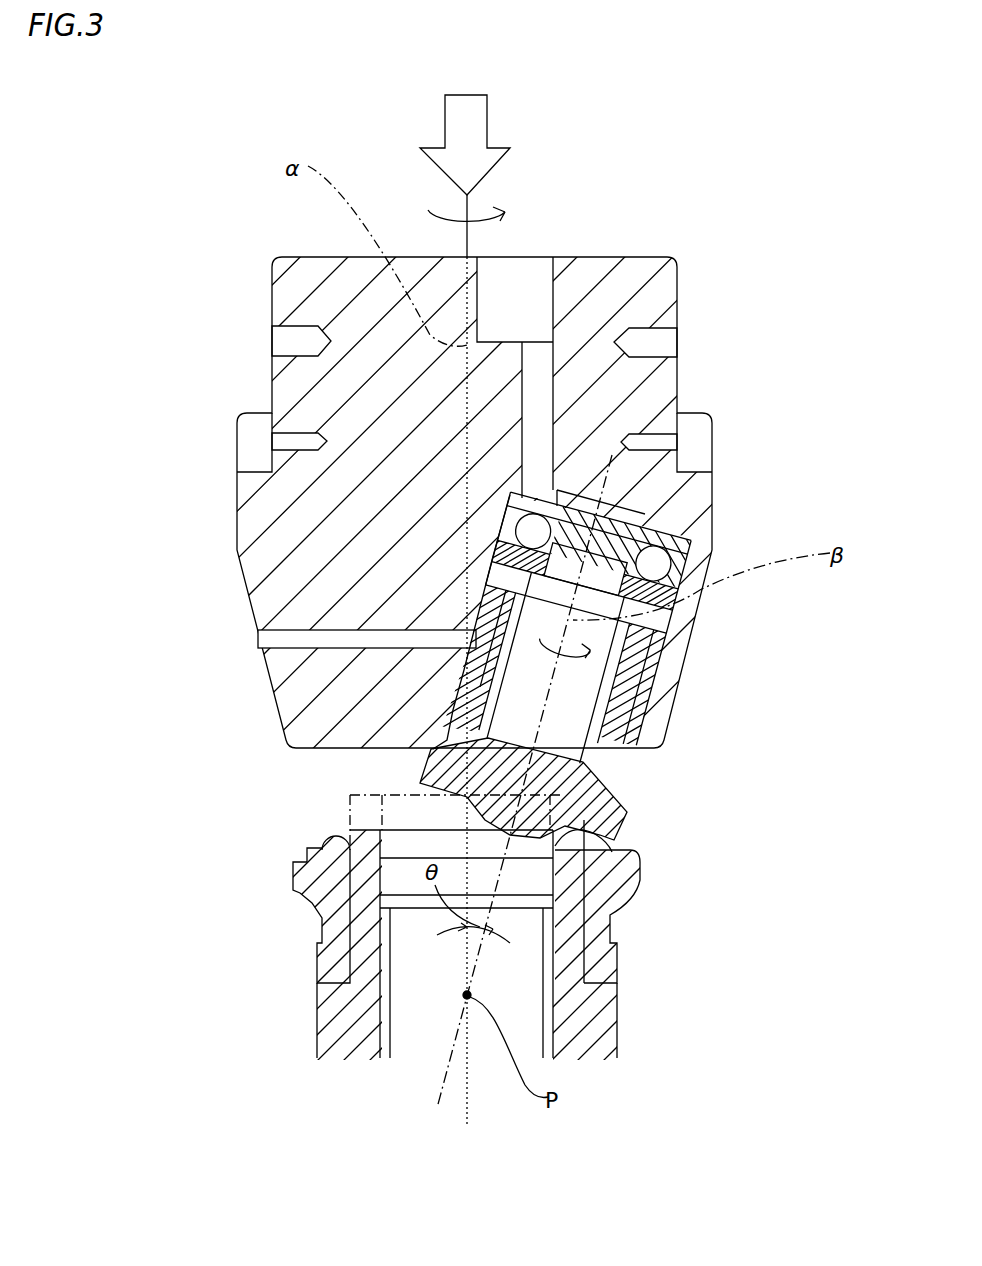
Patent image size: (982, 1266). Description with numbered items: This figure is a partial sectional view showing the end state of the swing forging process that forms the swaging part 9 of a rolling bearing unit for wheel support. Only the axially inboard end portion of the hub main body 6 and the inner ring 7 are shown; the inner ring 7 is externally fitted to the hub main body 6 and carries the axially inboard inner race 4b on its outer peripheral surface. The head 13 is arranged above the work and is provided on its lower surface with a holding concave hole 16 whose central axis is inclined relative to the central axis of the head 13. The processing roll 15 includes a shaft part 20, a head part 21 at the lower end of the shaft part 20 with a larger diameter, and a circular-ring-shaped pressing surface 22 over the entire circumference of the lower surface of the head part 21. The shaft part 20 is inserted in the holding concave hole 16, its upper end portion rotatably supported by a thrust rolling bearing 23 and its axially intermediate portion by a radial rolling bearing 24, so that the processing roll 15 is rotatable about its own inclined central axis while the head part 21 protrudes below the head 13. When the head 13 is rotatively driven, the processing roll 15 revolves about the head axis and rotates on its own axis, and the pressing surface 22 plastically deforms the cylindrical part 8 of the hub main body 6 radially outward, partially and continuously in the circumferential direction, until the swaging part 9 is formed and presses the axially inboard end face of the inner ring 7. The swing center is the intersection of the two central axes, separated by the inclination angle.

The head 13 is at (312, 497).
The holding concave hole 16 is at (507, 593).
The cylindrical part 8 is at (350, 807).
The swaging part 9 is at (338, 840).
The inner ring 7 is at (323, 885).
The hub main body 6 is at (325, 1013).
The thrust rolling bearing 23 is at (653, 563).
The radial rolling bearing 24 is at (640, 643).
The shaft part 20 is at (585, 678).
The processing roll 15 is at (575, 707).
The head part 21 is at (580, 772).
The pressing surface 22 is at (600, 846).
The inner race 4b is at (613, 907).